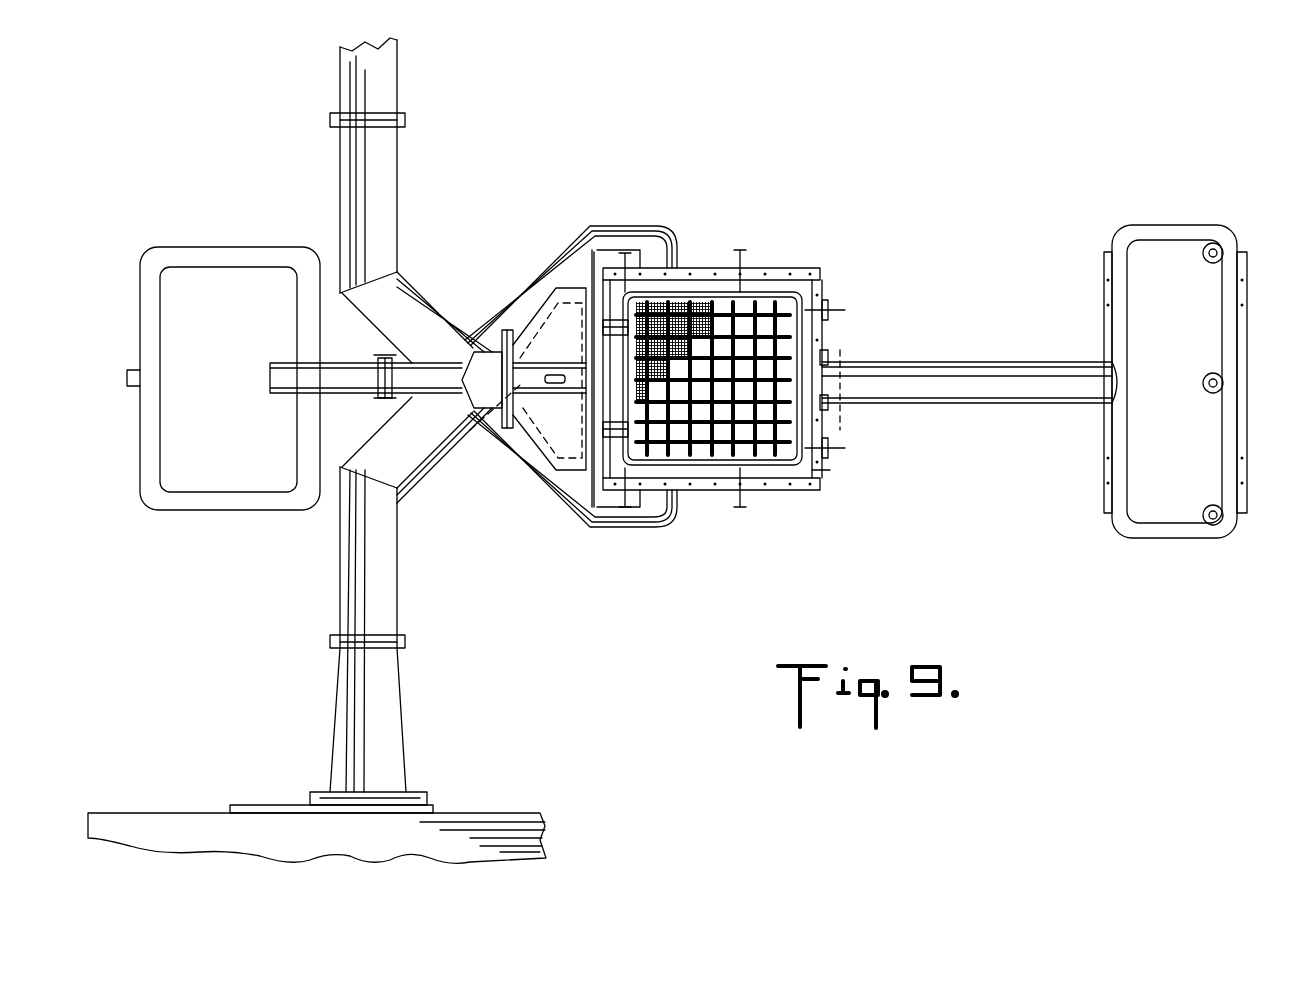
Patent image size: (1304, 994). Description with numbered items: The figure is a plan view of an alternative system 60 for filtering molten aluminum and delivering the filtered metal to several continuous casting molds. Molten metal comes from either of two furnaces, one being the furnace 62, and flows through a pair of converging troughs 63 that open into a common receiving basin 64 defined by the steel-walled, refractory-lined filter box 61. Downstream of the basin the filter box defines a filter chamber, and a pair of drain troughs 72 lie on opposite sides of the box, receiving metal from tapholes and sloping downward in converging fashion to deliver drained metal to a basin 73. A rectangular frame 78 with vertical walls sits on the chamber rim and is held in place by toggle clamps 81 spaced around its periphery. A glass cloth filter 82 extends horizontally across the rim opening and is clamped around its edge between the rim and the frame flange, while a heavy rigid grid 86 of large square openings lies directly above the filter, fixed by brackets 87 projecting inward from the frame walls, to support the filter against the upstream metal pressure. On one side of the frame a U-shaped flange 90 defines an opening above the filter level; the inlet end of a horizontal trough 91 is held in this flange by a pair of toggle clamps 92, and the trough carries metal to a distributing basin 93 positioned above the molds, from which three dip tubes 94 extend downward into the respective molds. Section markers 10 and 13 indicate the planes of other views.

The centerline/section arrow 10 is at (82, 390).
The section indicator 13 is at (838, 330).
The system 60 is at (770, 522).
The filter box 61 is at (577, 283).
The furnace 62 is at (330, 853).
The converging troughs 63 is at (356, 160).
The receiving basin 64 is at (520, 447).
The drain troughs 72 is at (603, 233).
The basin 73 is at (242, 321).
The rectangular frame 78 is at (692, 492).
The toggle clamps 81 is at (832, 470).
The glass cloth filter 82 is at (702, 300).
The rigid grid 86 is at (745, 330).
The brackets 87 is at (835, 445).
The U-shaped flange 90 is at (830, 312).
The horizontal trough 91 is at (928, 425).
The toggle clamps 92 is at (830, 398).
The distributing basin 93 is at (1186, 315).
The dip tubes 94 is at (1218, 258).